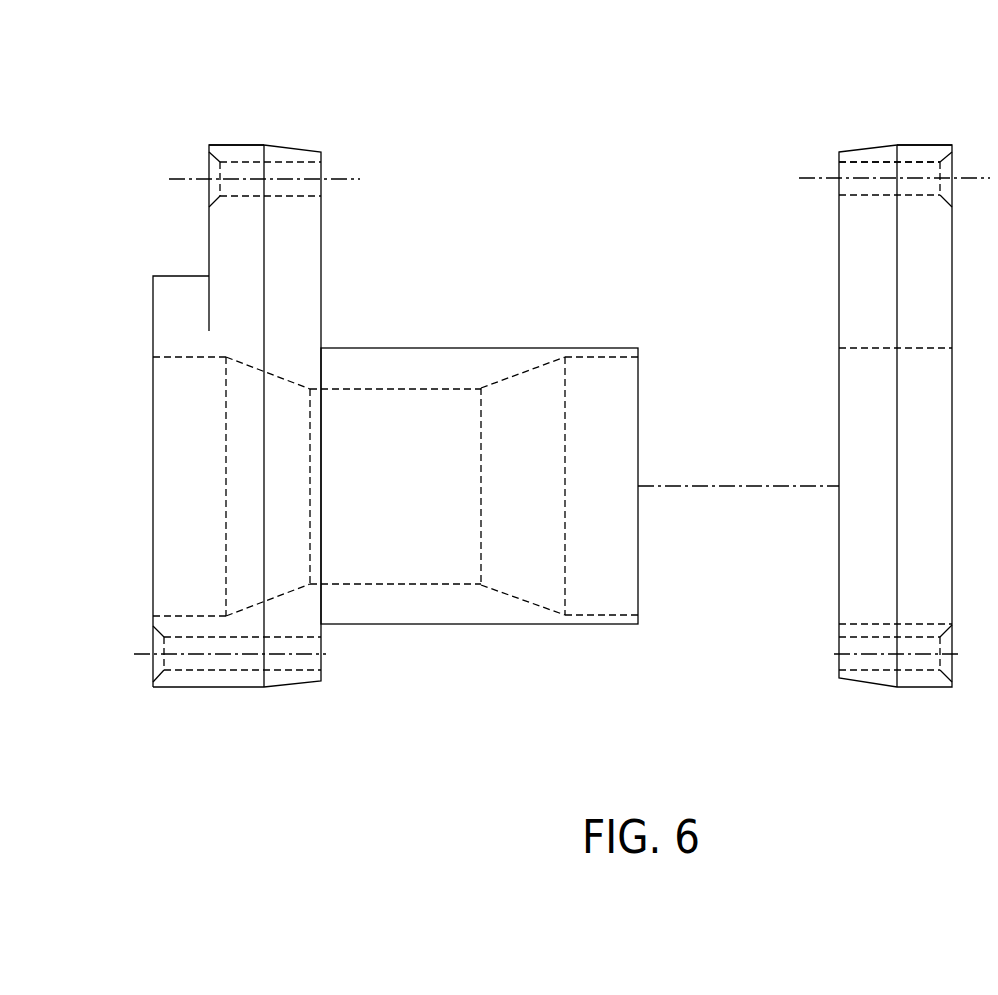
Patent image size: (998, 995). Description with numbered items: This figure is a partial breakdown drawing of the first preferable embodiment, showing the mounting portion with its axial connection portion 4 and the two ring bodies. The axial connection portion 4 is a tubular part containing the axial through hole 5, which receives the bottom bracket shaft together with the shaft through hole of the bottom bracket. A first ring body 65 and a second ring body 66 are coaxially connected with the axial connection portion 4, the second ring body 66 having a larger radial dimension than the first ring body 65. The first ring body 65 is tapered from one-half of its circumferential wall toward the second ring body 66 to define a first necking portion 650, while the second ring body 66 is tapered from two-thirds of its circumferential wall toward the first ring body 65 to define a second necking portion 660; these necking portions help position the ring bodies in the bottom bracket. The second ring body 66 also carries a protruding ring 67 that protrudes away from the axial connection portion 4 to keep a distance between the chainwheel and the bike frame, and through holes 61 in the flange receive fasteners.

The axial connection portion 4 is at (409, 363).
The axial through hole 5 is at (416, 551).
The through holes 61 is at (874, 167).
The first ring body 65 is at (740, 126).
The first necking portion 650 is at (845, 127).
The second ring body 66 is at (524, 157).
The second necking portion 660 is at (292, 132).
The protruding ring 67 is at (170, 304).